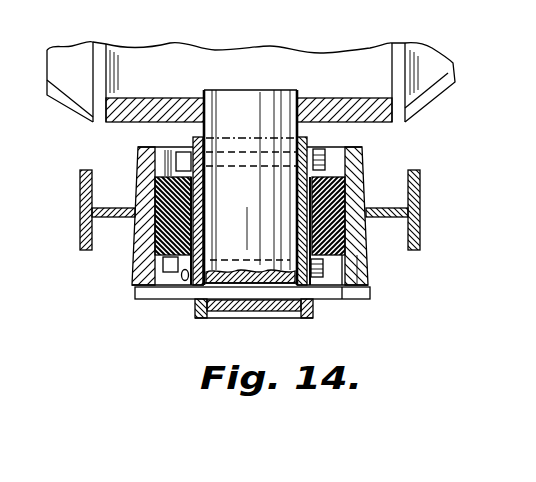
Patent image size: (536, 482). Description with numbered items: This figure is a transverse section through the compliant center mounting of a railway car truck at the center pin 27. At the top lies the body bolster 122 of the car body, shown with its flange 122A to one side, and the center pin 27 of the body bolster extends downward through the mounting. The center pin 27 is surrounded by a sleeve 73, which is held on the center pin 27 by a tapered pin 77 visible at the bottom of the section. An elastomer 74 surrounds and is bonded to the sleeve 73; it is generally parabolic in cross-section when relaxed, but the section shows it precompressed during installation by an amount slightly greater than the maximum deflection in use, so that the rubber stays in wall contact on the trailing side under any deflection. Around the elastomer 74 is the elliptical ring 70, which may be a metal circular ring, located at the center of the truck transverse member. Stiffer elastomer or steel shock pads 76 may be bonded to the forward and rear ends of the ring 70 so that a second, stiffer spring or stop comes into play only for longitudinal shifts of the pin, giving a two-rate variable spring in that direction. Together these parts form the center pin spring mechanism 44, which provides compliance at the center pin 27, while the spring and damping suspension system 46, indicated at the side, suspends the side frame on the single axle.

The body bolster 122 is at (176, 53).
The frame flange 122A is at (82, 214).
The center pin 27 is at (251, 199).
The center pin spring mechanism 44 is at (115, 276).
The spring and damping suspension system 46 is at (406, 262).
The elliptical ring 70 is at (356, 299).
The sleeve 73 is at (322, 299).
The elastomer 74 is at (363, 197).
The shock pads 76 is at (183, 170).
The tapered pin 77 is at (268, 299).